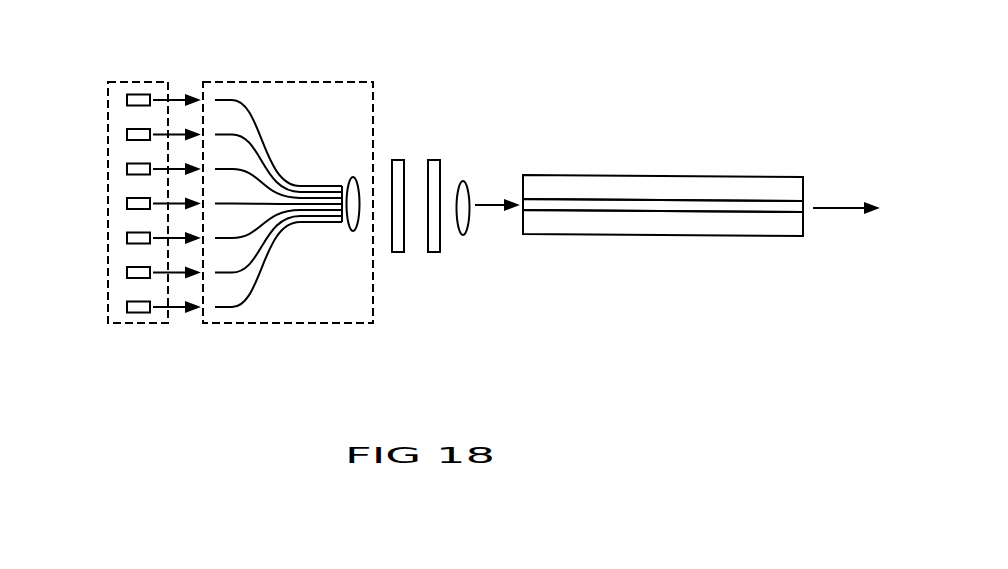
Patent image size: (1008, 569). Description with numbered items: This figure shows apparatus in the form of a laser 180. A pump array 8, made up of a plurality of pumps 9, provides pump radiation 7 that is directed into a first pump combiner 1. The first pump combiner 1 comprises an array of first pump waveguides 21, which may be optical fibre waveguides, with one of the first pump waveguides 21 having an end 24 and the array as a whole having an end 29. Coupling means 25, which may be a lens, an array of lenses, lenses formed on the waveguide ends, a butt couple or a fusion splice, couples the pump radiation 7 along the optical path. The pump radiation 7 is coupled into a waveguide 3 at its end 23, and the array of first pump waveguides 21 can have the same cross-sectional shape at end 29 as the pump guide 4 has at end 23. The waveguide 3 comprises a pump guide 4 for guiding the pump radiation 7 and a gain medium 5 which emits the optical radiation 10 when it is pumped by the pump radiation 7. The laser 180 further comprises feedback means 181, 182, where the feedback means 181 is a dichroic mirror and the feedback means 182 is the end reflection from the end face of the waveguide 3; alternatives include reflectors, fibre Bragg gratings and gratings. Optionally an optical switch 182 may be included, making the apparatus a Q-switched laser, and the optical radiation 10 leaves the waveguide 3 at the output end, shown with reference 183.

The first pump combiner 1 is at (302, 82).
The waveguide 3 is at (683, 237).
The pump guide 4 is at (565, 175).
The gain medium 5 is at (715, 200).
The pump radiation 7 is at (173, 80).
The pump array 8 is at (122, 65).
The pumps 9 is at (125, 98).
The optical radiation 10 is at (840, 202).
The first pump waveguides 21 is at (245, 142).
The end of pump guide 23 is at (522, 175).
The end of first pump waveguide 24 is at (215, 98).
The coupling means 25 is at (352, 178).
The end of first pump waveguide array 29 is at (335, 223).
The laser 180 is at (606, 322).
The feedback means 181 is at (398, 252).
The feedback means 182 is at (438, 252).
The output face 183 is at (803, 213).